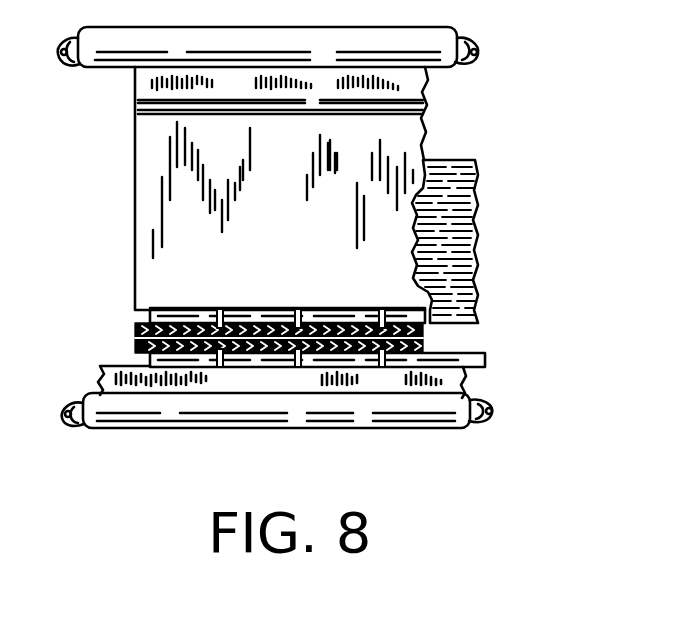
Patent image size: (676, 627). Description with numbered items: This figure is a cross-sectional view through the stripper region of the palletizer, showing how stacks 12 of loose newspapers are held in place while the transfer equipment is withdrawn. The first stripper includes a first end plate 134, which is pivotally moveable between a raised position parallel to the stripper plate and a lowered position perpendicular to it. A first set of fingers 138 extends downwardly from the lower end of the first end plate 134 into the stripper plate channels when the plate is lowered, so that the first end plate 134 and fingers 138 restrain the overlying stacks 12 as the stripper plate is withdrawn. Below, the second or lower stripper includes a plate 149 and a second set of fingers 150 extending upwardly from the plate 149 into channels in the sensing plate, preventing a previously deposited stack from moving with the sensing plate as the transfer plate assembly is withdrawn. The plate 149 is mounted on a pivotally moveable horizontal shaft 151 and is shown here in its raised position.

The stacks 12 is at (135, 360).
The first end plate 134 is at (373, 133).
The first set of fingers 138 is at (300, 308).
The plate 149 is at (470, 398).
The second set of fingers 150 is at (298, 367).
The horizontal shaft 151 is at (457, 382).